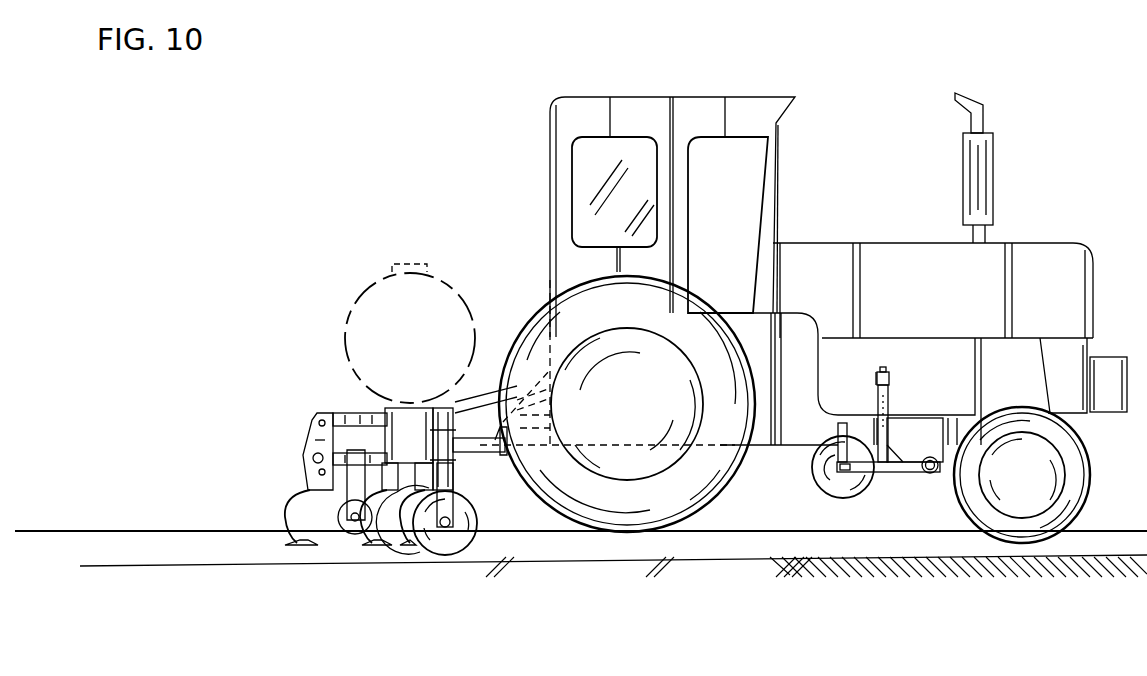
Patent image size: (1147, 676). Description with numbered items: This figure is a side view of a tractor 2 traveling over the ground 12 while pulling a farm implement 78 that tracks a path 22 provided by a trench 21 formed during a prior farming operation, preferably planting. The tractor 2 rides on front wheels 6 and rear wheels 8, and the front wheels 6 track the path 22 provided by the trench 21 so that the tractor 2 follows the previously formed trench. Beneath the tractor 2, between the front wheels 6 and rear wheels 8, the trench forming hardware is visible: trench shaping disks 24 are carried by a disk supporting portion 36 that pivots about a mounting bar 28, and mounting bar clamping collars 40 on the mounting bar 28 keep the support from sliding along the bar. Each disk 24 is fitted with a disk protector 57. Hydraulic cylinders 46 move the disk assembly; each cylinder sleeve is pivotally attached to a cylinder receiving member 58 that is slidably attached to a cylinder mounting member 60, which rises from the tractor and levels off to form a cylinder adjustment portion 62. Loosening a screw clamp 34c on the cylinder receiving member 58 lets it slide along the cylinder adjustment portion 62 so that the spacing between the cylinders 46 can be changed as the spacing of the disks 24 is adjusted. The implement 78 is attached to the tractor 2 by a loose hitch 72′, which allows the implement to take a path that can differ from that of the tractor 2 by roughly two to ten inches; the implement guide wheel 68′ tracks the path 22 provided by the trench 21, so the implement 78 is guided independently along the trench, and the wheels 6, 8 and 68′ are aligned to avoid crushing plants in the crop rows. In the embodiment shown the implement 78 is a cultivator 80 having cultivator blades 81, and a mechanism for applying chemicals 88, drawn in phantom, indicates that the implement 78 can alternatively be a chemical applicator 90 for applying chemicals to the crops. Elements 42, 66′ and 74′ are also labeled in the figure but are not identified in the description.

The tractor 2 is at (925, 310).
The front wheels 6 is at (1014, 483).
The rear wheels 8 is at (622, 409).
The ground 12 is at (1002, 563).
The trench 21 is at (696, 556).
The path 22 is at (746, 567).
The trench shaping disks 24 is at (814, 467).
The mounting bar 28 is at (932, 475).
The screw clamp 34c is at (887, 371).
The disk supporting portion 36 is at (850, 477).
The mounting bar clamping collars 40 is at (925, 473).
The wheel mounting 42 is at (840, 470).
The hydraulic cylinders 46 is at (897, 413).
The disk protector 57 is at (840, 427).
The cylinder receiving member 58 is at (890, 392).
The cylinder mounting member 60 is at (890, 378).
The cylinder adjustment portion 62 is at (878, 378).
The depth wheel 66′ is at (439, 560).
The implement guide wheels 68′ is at (464, 542).
The loose hitch 72′ is at (488, 382).
The press wheel 74′ is at (353, 528).
The farm implement 78 is at (326, 350).
The cultivator 80 is at (348, 406).
The cultivator blades 81 is at (283, 512).
The mechanism for applying chemicals 88 is at (372, 335).
The chemical applicator 90 is at (428, 310).